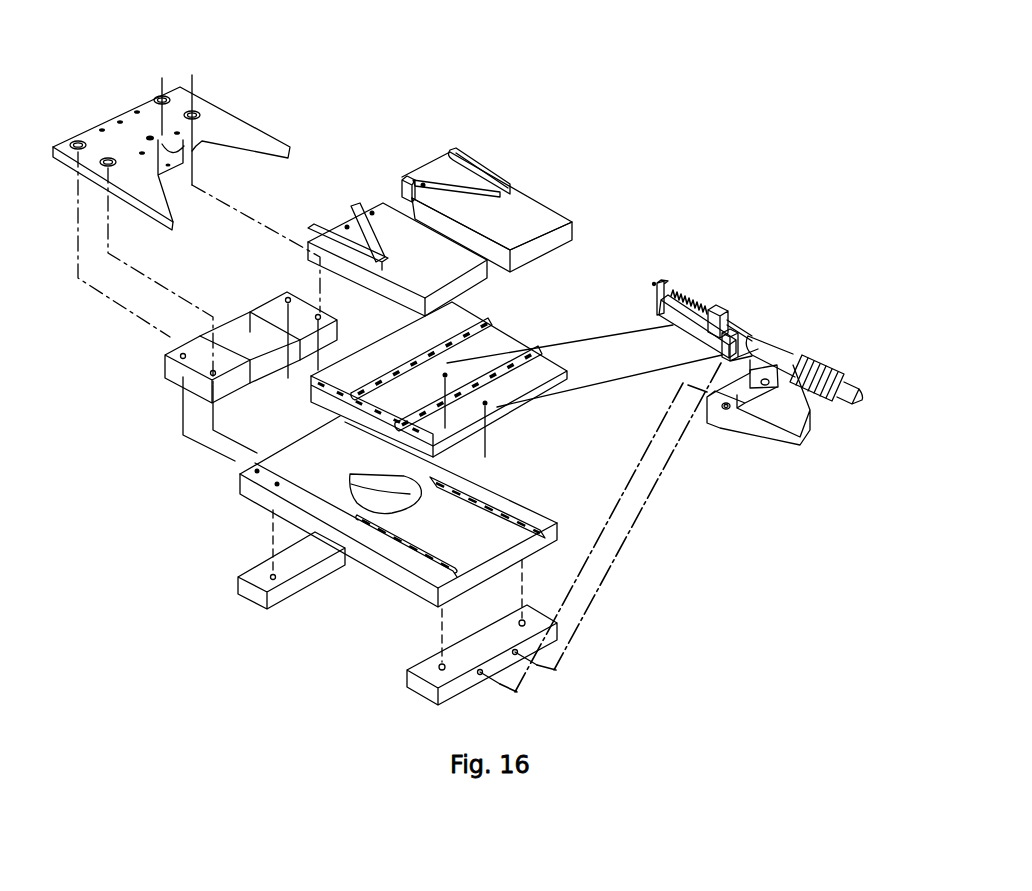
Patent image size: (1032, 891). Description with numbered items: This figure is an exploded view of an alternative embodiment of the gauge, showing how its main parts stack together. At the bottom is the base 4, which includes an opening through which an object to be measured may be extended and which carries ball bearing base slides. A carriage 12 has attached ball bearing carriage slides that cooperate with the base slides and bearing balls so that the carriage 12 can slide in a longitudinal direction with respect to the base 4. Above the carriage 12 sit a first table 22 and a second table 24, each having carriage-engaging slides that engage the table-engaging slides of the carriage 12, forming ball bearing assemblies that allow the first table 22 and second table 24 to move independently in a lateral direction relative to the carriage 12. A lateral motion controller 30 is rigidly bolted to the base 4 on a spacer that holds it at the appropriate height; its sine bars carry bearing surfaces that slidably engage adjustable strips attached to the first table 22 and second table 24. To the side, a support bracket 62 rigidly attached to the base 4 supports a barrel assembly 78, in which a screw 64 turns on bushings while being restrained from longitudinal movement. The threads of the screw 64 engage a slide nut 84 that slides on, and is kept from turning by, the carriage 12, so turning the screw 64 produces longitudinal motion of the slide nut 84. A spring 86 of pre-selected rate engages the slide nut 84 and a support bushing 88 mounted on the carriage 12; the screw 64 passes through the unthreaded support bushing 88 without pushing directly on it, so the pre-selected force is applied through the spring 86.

The base 4 is at (380, 574).
The carriage 12 is at (311, 376).
The first table 22 is at (360, 207).
The second table 24 is at (511, 190).
The lateral motion controller 30 is at (112, 112).
The support bracket 62 is at (758, 427).
The screw 64 is at (748, 330).
The barrel assembly 78 is at (830, 353).
The slide nut 84 is at (727, 303).
The spring 86 is at (692, 298).
The support bushing 88 is at (667, 283).